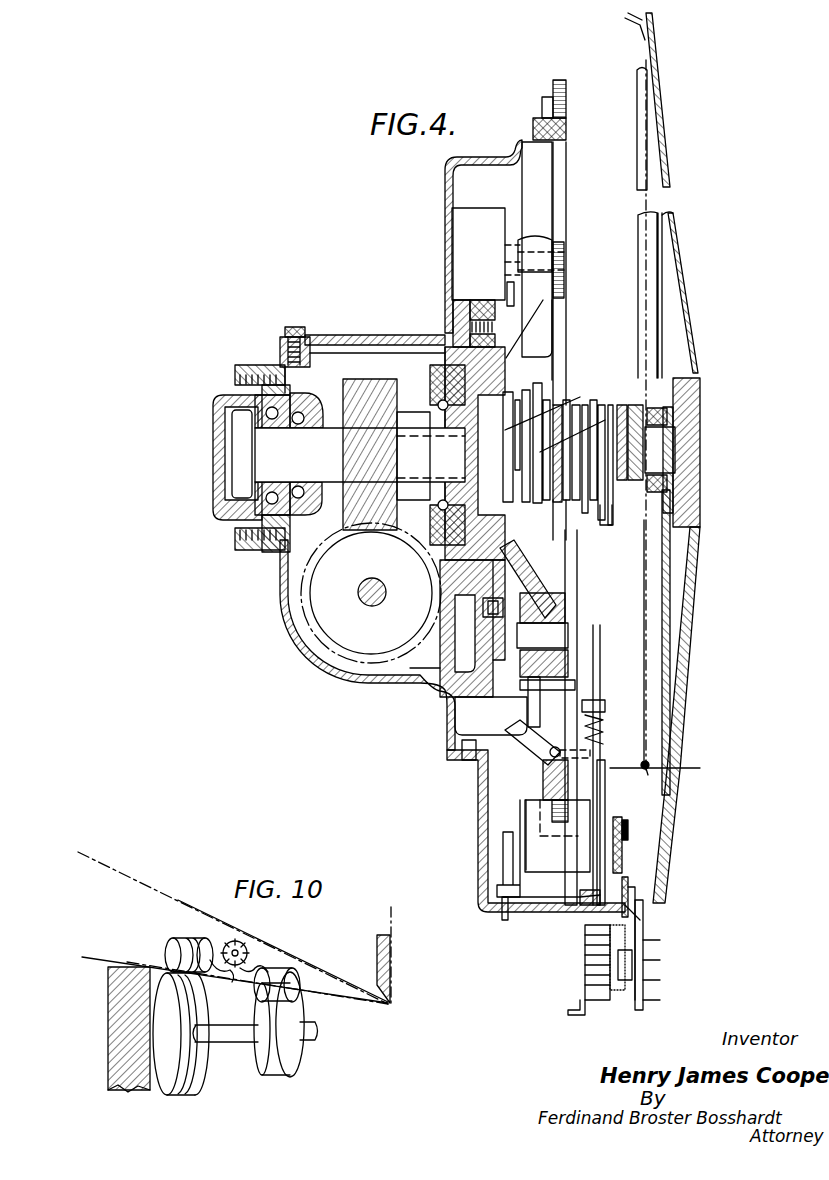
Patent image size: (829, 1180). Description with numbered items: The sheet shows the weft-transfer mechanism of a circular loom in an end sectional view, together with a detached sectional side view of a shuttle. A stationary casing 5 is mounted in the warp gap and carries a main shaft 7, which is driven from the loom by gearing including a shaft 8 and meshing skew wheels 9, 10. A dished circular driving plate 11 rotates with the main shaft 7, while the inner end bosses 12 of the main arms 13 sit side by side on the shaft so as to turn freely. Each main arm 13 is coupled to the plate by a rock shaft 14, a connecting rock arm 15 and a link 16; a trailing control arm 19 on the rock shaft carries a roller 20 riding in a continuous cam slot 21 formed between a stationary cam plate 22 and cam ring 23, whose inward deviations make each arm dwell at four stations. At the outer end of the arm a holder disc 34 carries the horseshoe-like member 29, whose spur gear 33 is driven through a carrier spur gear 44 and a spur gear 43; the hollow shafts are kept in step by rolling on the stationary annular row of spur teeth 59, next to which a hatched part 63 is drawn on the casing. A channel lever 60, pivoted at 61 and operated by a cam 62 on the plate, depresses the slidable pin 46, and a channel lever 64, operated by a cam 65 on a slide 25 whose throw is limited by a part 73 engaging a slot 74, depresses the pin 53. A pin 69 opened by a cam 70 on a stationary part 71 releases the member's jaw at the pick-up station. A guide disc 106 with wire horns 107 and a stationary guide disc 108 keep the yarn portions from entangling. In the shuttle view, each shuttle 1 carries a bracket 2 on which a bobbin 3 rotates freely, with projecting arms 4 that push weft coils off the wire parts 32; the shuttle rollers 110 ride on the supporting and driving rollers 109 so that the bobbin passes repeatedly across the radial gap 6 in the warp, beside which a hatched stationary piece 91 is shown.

In FIG. 10, the shuttle 1 is at (248, 975).
In FIG. 4, the bracket 2 is at (586, 980).
In FIG. 10, the bracket 2 is at (232, 985).
In FIG. 4, the bobbin 3 is at (614, 990).
In FIG. 10, the bobbin 3 is at (245, 945).
In FIG. 4, the arms 4 is at (588, 950).
In FIG. 10, the arms 4 is at (238, 940).
In FIG. 4, the casing 5 is at (446, 170).
In FIG. 10, the radial gap 6 is at (142, 885).
In FIG. 4, the main shaft 7 is at (339, 458).
In FIG. 4, the shaft 8 is at (366, 602).
In FIG. 4, the skew wheel 9 is at (330, 591).
In FIG. 4, the skew wheel 10 is at (378, 512).
In FIG. 4, the driving plate 11 is at (505, 545).
In FIG. 4, the inner end bosses 12 is at (614, 414).
In FIG. 4, the main arms 13 is at (612, 522).
In FIG. 4, the rock shaft 14 is at (556, 262).
In FIG. 4, the connecting rock arm 15 is at (560, 283).
In FIG. 4, the link 16 is at (600, 740).
In FIG. 4, the trailing control arm 19 is at (508, 298).
In FIG. 4, the roller 20 is at (495, 600).
In FIG. 4, the cam slot 21 is at (422, 670).
In FIG. 4, the cam plate 22 is at (476, 222).
In FIG. 4, the cam ring 23 is at (468, 320).
In FIG. 4, the slide 25 is at (576, 685).
In FIG. 4, the horseshoe-like member 29 is at (634, 1004).
In FIG. 4, the wire parts 32 is at (650, 975).
In FIG. 4, the spur gear 33 is at (630, 892).
In FIG. 4, the holder disc 34 is at (605, 812).
In FIG. 4, the spur gear 43 is at (624, 846).
In FIG. 4, the carrier spur gear 44 is at (628, 866).
In FIG. 4, the slidable pin 46 is at (660, 767).
In FIG. 4, the pin 53 is at (503, 912).
In FIG. 4, the annular row of spur teeth 59 is at (548, 99).
In FIG. 4, the channel lever 60 is at (580, 753).
In FIG. 4, the pivot 61 is at (542, 770).
In FIG. 4, the cam 62 is at (596, 708).
In FIG. 4, the flange 63 is at (562, 136).
In FIG. 4, the channel lever 64 is at (538, 750).
In FIG. 4, the cam 65 is at (525, 721).
In FIG. 4, the pin 69 is at (640, 920).
In FIG. 4, the cam 70 is at (592, 905).
In FIG. 4, the stationary part 71 is at (530, 914).
In FIG. 4, the part 73 is at (566, 665).
In FIG. 4, the slot 74 is at (532, 694).
In FIG. 10, the abutment 91 is at (391, 947).
In FIG. 4, the guide disc 106 is at (696, 584).
In FIG. 4, the horns 107 is at (626, 22).
In FIG. 4, the stationary guide disc 108 is at (670, 680).
In FIG. 10, the supporting and driving rollers 109 is at (170, 1092).
In FIG. 10, the shuttle rollers 110 is at (176, 940).